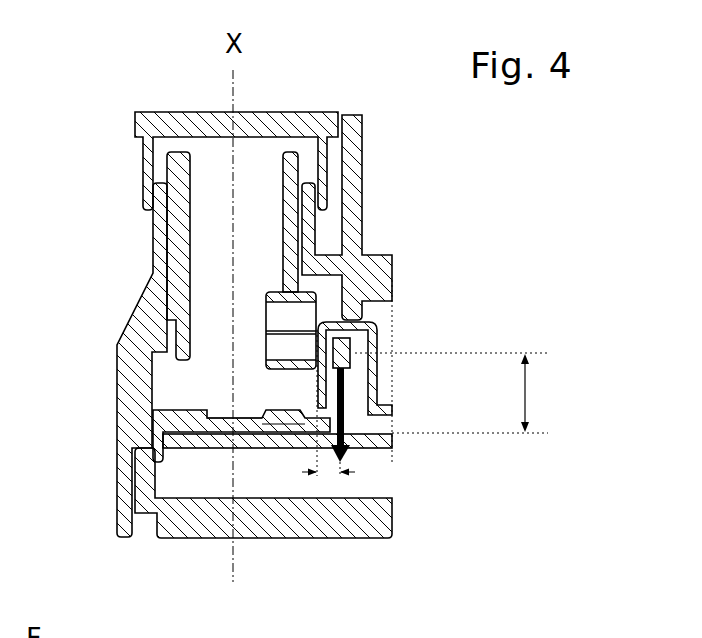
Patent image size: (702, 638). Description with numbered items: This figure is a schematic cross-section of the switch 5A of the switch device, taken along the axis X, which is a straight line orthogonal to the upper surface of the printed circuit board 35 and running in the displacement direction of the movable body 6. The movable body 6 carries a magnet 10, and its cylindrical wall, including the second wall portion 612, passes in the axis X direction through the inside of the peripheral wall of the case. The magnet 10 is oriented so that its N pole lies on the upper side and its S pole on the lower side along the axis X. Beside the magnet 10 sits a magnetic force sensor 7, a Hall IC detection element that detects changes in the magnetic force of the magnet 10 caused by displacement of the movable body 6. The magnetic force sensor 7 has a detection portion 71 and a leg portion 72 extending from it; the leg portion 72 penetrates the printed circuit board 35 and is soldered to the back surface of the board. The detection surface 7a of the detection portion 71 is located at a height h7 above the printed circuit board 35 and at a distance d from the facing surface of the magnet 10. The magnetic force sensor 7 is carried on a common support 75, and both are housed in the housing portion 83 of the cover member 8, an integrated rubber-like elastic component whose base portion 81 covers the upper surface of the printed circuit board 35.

The switch 5A is at (118, 97).
The movable body 6 is at (162, 162).
The second wall portion 612 is at (154, 253).
The cover member 8 is at (235, 326).
The base portion 81 is at (190, 410).
The housing portion 83 is at (378, 323).
The magnet 10 is at (264, 311).
The magnetic force sensor 7 is at (411, 400).
The detection portion 71 is at (352, 368).
The leg portion 72 is at (345, 390).
The detection surface 7a is at (318, 372).
The printed circuit board 35 is at (393, 446).
The support 75 is at (347, 463).
The height h7 is at (463, 371).
The distance d is at (328, 416).